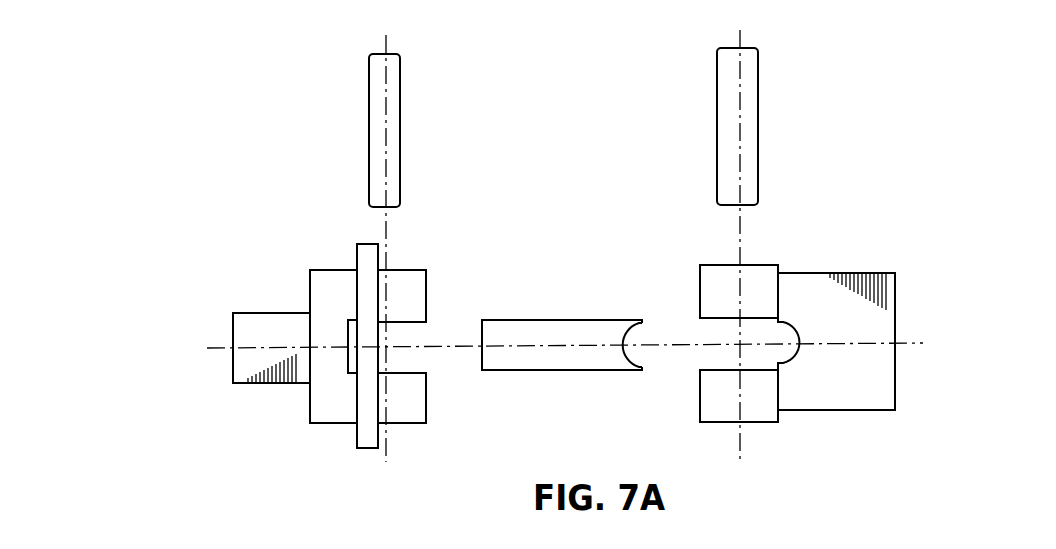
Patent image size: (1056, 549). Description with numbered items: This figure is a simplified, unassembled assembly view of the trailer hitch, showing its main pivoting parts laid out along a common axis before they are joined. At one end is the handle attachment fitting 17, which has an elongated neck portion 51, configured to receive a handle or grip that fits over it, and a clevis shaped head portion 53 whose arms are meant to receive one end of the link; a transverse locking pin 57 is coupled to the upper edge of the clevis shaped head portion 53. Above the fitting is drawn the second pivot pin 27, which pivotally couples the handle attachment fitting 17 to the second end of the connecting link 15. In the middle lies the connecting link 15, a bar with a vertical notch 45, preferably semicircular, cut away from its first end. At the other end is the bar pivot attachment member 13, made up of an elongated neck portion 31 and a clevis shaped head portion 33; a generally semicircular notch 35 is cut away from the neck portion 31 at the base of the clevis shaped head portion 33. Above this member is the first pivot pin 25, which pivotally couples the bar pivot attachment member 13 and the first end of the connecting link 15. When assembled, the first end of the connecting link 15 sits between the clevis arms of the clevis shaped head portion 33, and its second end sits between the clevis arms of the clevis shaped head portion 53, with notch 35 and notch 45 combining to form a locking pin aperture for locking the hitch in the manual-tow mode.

The bar pivot attachment member 13 is at (928, 315).
The connecting link 15 is at (542, 313).
The handle attachment fitting 17 is at (213, 313).
The first pivot pin 25 is at (763, 140).
The second pivot pin 27 is at (405, 140).
The elongated neck portion 31 is at (843, 393).
The clevis shaped head portion 33 is at (752, 402).
The semicircular notch 35 is at (795, 318).
The vertical notch 45 is at (620, 318).
The elongated neck portion 51 is at (272, 327).
The clevis shaped head portion 53 is at (408, 408).
The transverse locking pin 57 is at (368, 455).